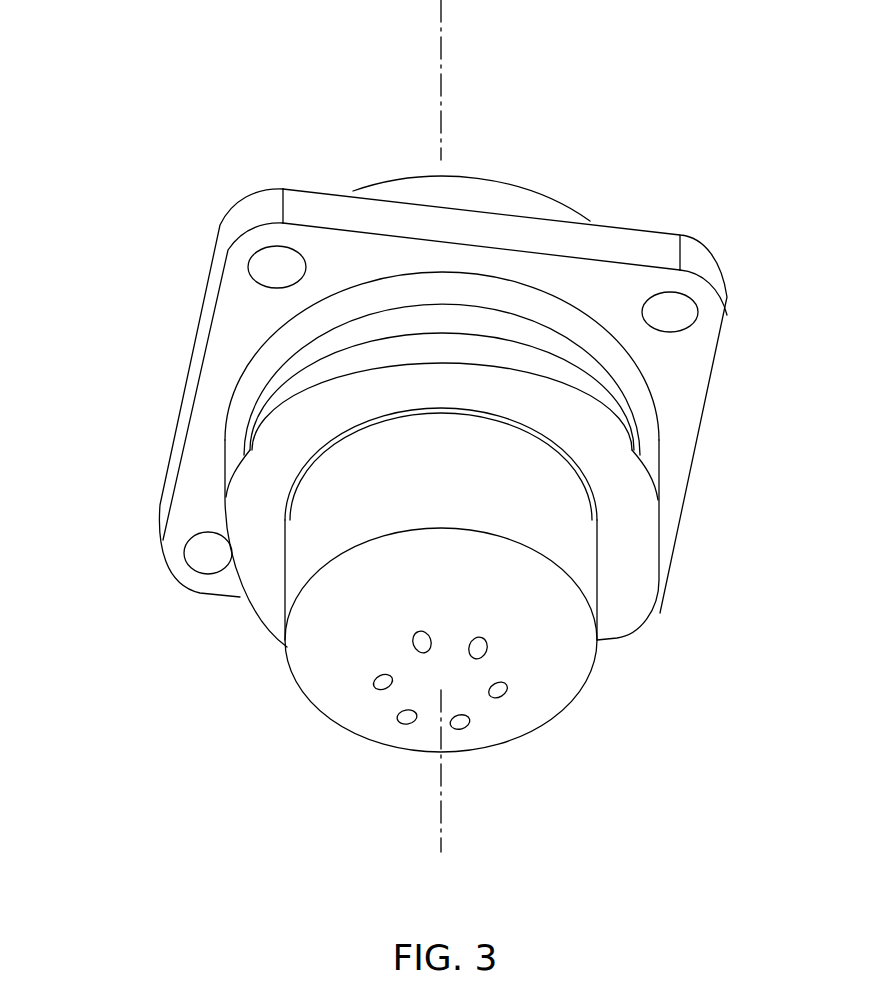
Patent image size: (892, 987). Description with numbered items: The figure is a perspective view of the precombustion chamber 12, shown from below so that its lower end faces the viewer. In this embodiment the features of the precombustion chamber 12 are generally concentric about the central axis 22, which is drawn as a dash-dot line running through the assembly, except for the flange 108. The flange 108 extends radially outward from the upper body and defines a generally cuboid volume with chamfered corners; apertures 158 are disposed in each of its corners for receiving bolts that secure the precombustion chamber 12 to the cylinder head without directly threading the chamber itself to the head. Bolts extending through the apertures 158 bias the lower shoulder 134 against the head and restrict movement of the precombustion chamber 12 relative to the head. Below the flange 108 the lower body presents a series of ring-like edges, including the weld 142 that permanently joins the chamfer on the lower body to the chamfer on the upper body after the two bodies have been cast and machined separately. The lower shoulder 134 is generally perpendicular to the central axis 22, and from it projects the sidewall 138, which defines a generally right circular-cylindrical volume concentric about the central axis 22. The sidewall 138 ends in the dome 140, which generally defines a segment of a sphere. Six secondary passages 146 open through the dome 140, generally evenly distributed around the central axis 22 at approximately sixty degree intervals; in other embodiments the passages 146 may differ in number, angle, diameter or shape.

The precombustion chamber 12 is at (665, 104).
The central axis 22 is at (440, 820).
The flange 108 is at (716, 400).
The lower shoulder 134 is at (640, 515).
The sidewall 138 is at (310, 557).
The dome 140 is at (558, 694).
The weld 142 is at (333, 370).
The secondary passages 146 is at (420, 636).
The apertures 158 is at (262, 247).